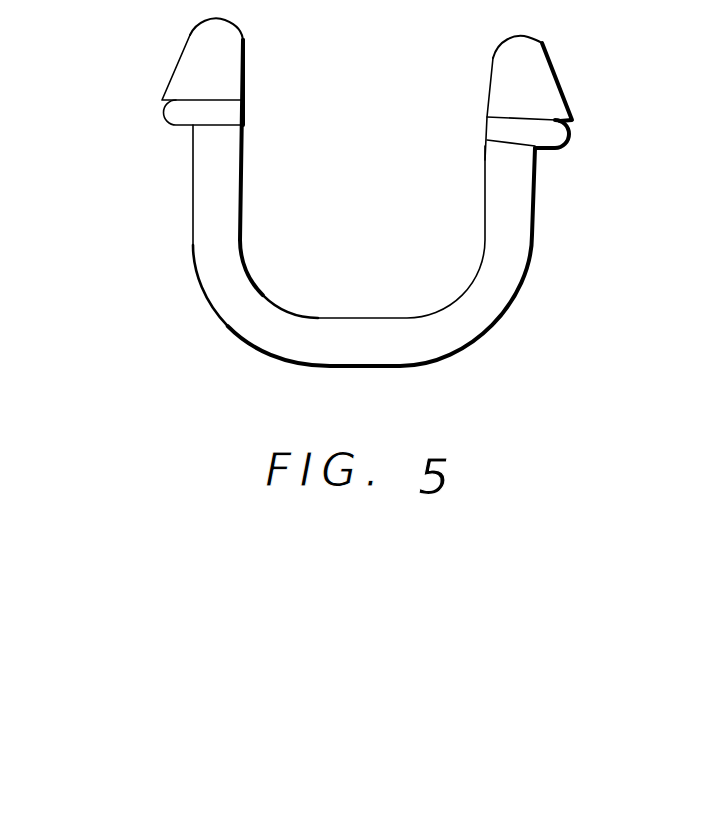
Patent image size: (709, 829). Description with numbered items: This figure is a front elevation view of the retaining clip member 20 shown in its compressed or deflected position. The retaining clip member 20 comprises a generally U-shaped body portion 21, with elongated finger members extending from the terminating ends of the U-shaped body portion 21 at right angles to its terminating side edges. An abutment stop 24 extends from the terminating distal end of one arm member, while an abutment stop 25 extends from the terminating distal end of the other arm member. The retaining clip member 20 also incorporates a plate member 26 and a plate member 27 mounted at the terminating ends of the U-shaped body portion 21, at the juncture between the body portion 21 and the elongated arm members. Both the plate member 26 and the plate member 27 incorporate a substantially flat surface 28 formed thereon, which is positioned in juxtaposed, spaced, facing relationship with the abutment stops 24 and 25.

The retaining clip member 20 is at (371, 223).
The U-shaped body portion 21 is at (275, 327).
The abutment stop 24 is at (557, 128).
The abutment stop 25 is at (177, 110).
The plate member 26 is at (570, 109).
The plate member 27 is at (163, 88).
The flat surface 28 is at (212, 50).